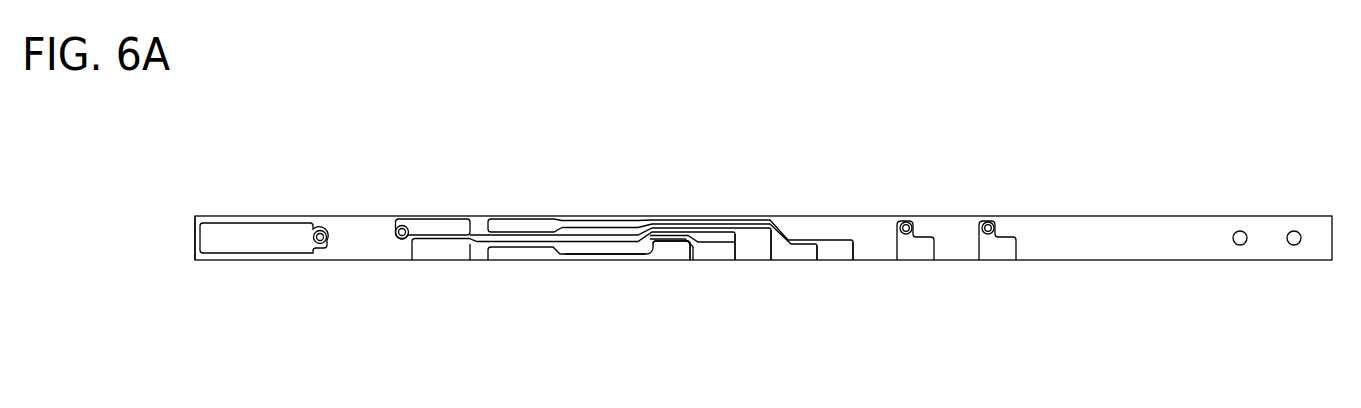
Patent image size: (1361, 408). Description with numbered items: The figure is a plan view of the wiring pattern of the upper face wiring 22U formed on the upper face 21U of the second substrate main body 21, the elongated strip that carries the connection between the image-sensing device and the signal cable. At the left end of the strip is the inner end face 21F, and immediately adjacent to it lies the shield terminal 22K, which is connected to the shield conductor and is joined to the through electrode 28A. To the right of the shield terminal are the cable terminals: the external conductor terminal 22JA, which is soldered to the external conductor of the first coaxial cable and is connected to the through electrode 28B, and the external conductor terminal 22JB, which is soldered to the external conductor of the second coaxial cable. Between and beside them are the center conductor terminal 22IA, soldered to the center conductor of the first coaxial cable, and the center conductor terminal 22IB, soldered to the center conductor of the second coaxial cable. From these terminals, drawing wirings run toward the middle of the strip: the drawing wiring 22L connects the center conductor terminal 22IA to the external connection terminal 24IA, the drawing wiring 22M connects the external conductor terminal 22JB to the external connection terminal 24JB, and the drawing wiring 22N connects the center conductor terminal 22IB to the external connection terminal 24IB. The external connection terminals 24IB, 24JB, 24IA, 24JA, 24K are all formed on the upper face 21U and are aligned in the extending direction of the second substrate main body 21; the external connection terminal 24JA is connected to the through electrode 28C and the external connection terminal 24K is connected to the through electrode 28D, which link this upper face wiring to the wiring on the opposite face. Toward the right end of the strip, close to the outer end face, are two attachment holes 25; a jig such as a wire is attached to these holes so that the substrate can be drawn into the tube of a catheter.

The second substrate main body 21 is at (763, 181).
The upper face 21U is at (1011, 193).
The inner end face 21F is at (194, 235).
The upper face wiring 22U is at (485, 247).
The shield terminal 22K is at (260, 245).
The external conductor terminal 22JA is at (443, 228).
The external conductor terminal 22JB is at (441, 250).
The center conductor terminal 22IA is at (517, 228).
The center conductor terminal 22IB is at (519, 252).
The drawing wiring 22L is at (745, 226).
The drawing wiring 22M is at (634, 238).
The drawing wiring 22N is at (612, 250).
The external connection terminal 24IB is at (672, 255).
The external connection terminal 24JB is at (752, 256).
The external connection terminal 24IA is at (833, 256).
The external connection terminal 24JA is at (915, 252).
The external connection terminal 24K is at (998, 252).
The through electrode 28A is at (321, 230).
The through electrode 28B is at (403, 225).
The through electrode 28C is at (899, 222).
The through electrode 28D is at (981, 222).
The attachment holes 25 is at (1290, 232).